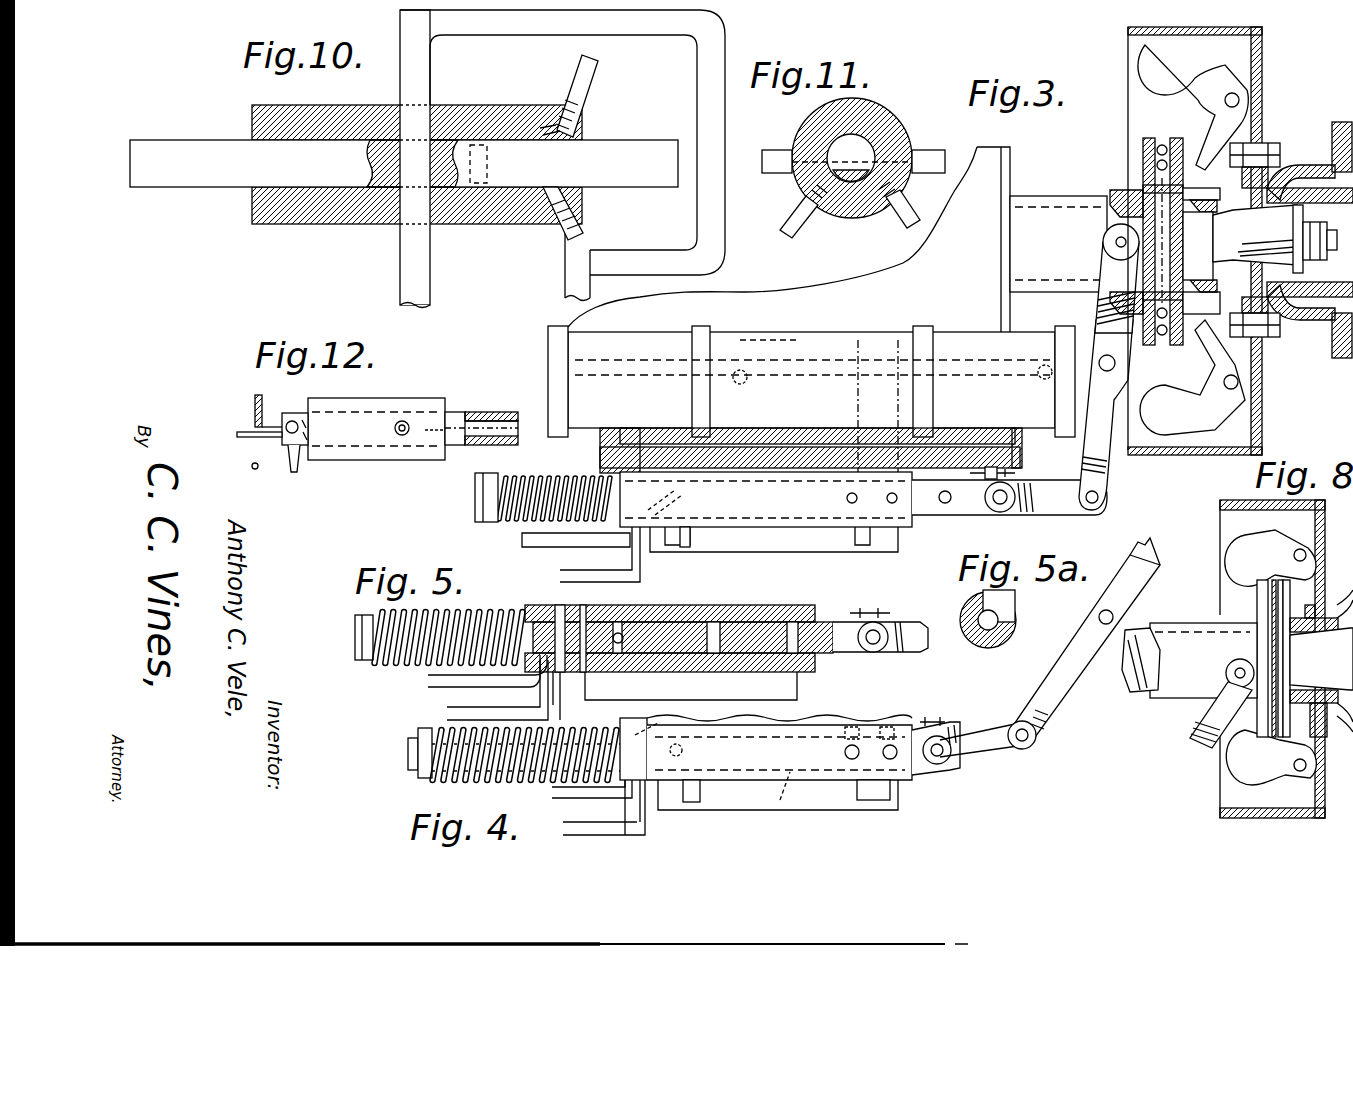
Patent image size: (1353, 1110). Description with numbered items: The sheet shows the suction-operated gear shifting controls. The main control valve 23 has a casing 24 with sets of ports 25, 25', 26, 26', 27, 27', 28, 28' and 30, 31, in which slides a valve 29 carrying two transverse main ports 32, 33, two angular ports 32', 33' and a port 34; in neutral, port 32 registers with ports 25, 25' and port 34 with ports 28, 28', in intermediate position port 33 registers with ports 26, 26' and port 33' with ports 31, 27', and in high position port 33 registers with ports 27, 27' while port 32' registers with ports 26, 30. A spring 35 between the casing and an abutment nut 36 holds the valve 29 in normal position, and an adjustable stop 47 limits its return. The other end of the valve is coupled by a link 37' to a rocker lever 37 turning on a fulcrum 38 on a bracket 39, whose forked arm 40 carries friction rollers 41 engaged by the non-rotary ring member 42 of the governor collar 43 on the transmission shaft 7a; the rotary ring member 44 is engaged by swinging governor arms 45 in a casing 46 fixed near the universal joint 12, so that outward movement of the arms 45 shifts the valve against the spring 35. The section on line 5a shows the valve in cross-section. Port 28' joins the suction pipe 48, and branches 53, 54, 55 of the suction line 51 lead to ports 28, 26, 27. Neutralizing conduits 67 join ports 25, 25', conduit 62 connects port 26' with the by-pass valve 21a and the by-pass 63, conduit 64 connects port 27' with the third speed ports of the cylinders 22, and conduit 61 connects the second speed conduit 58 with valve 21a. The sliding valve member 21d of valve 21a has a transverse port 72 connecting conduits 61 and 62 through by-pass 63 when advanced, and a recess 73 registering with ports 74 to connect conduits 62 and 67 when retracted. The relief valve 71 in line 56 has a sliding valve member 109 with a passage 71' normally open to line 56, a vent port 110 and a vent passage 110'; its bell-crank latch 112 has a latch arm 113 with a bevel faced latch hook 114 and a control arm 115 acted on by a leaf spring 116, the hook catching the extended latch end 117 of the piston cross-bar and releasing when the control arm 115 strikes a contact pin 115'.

In FIG. 3, the section line 5a is at (848, 425).
In FIG. 3, the transmission shaft 7a is at (1272, 232).
In FIG. 8, the transmission shaft 7a is at (1138, 690).
In FIG. 3, the universal joint 12 is at (1291, 240).
In FIG. 8, the universal joint 12 is at (1340, 730).
In FIG. 10, the by-pass valve 21a is at (372, 108).
In FIG. 11, the by-pass valve 21a is at (866, 112).
In FIG. 10, the sliding valve member 21d is at (220, 182).
In FIG. 11, the sliding valve member 21d is at (832, 150).
In FIG. 3, the cylinder 22 is at (650, 345).
In FIG. 3, the main control valve 23 is at (668, 445).
In FIG. 3, the casing 24 is at (778, 470).
In FIG. 5, the casing 24 is at (822, 622).
In FIG. 4, the casing 24 is at (778, 735).
In FIG. 5a, the casing 24 is at (1008, 598).
In FIG. 5, the port 25 is at (525, 696).
In FIG. 4, the port 25 is at (617, 807).
In FIG. 5, the port 25' is at (542, 624).
In FIG. 4, the port 25' is at (690, 710).
In FIG. 5, the port 26 is at (722, 683).
In FIG. 4, the port 26 is at (846, 813).
In FIG. 3, the port 26' is at (821, 532).
In FIG. 5, the port 26' is at (767, 589).
In FIG. 4, the port 26' is at (855, 715).
In FIG. 5a, the port 26' is at (1019, 615).
In FIG. 5, the port 27 is at (813, 683).
In FIG. 4, the port 27 is at (934, 781).
In FIG. 3, the port 27' is at (878, 496).
In FIG. 5, the port 27' is at (809, 599).
In FIG. 4, the port 27' is at (913, 710).
In FIG. 5, the port 28 is at (606, 683).
In FIG. 4, the port 28 is at (731, 814).
In FIG. 3, the port 28' is at (653, 498).
In FIG. 4, the port 28' is at (683, 781).
In FIG. 3, the sliding valve 29 is at (935, 512).
In FIG. 5, the sliding valve 29 is at (680, 622).
In FIG. 4, the sliding valve 29 is at (450, 757).
In FIG. 5a, the sliding valve 29 is at (993, 648).
In FIG. 5, the port 30 is at (738, 622).
In FIG. 4, the port 30 is at (848, 745).
In FIG. 4, the port 31 is at (930, 722).
In FIG. 5a, the port 31 is at (952, 709).
In FIG. 3, the main port 32 is at (764, 532).
In FIG. 5, the main port 32 is at (679, 624).
In FIG. 4, the main port 32 is at (753, 738).
In FIG. 5, the angular port 32' is at (730, 593).
In FIG. 4, the angular port 32' is at (780, 804).
In FIG. 5, the main port 33 is at (780, 599).
In FIG. 4, the main port 33 is at (825, 803).
In FIG. 3, the angular port 33' is at (955, 477).
In FIG. 5, the angular port 33' is at (835, 665).
In FIG. 4, the angular port 33' is at (899, 722).
In FIG. 3, the port 34 is at (710, 520).
In FIG. 5, the port 34 is at (638, 622).
In FIG. 3, the spring 35 is at (565, 478).
In FIG. 5, the spring 35 is at (462, 616).
In FIG. 4, the spring 35 is at (440, 732).
In FIG. 3, the abutment nut 36 is at (478, 485).
In FIG. 5, the abutment nut 36 is at (366, 662).
In FIG. 4, the abutment nut 36 is at (410, 750).
In FIG. 3, the rocker lever 37 is at (1132, 415).
In FIG. 5a, the rocker lever 37 is at (1085, 639).
In FIG. 3, the link 37' is at (1072, 468).
In FIG. 5, the link 37' is at (929, 652).
In FIG. 5a, the link 37' is at (988, 744).
In FIG. 3, the fulcrum 38 is at (1116, 362).
In FIG. 5a, the fulcrum 38 is at (1115, 617).
In FIG. 3, the bracket 39 is at (1083, 357).
In FIG. 3, the forked arm 40 is at (1103, 270).
In FIG. 8, the forked arm 40 is at (1195, 735).
In FIG. 3, the friction rollers 41 is at (1105, 240).
In FIG. 8, the friction rollers 41 is at (1225, 680).
In FIG. 3, the non-rotary ring member 42 is at (1143, 160).
In FIG. 8, the non-rotary ring member 42 is at (1255, 610).
In FIG. 3, the centrifugal governor collar 43 is at (1149, 140).
In FIG. 8, the centrifugal governor collar 43 is at (1255, 583).
In FIG. 3, the rotary ring member 44 is at (1178, 140).
In FIG. 8, the rotary ring member 44 is at (1290, 578).
In FIG. 3, the governor arms 45 is at (1225, 70).
In FIG. 8, the governor arms 45 is at (1285, 540).
In FIG. 3, the casing 46 is at (1188, 30).
In FIG. 8, the casing 46 is at (1225, 520).
In FIG. 3, the adjustable stop 47 is at (1015, 470).
In FIG. 5, the adjustable stop 47 is at (872, 612).
In FIG. 5a, the adjustable stop 47 is at (958, 728).
In FIG. 3, the suction pipe 48 is at (530, 545).
In FIG. 5, the suction pipe 48 is at (430, 683).
In FIG. 4, the suction pipe 48 is at (560, 800).
In FIG. 3, the suction line 51 is at (655, 550).
In FIG. 5, the suction line 51 is at (678, 700).
In FIG. 4, the suction line 51 is at (890, 805).
In FIG. 3, the branch 53 is at (688, 540).
In FIG. 3, the branch 54 is at (863, 545).
In FIG. 3, the branch 55 is at (900, 532).
In FIG. 12, the suction line 56 is at (406, 420).
In FIG. 3, the second speed conduit 58 is at (770, 360).
In FIG. 10, the conduit 61 is at (420, 286).
In FIG. 11, the conduit 61 is at (773, 150).
In FIG. 10, the conduit 62 is at (591, 292).
In FIG. 11, the conduit 62 is at (786, 216).
In FIG. 10, the by-pass 63 is at (618, 30).
In FIG. 11, the by-pass 63 is at (924, 150).
In FIG. 3, the suction conduit 64 is at (820, 375).
In FIG. 10, the neutralizing conduit 67 is at (586, 95).
In FIG. 11, the neutralizing conduit 67 is at (910, 210).
In FIG. 3, the neutralizing conduit 67 is at (810, 440).
In FIG. 5, the neutralizing conduit 67 is at (458, 715).
In FIG. 4, the neutralizing conduit 67 is at (563, 828).
In FIG. 12, the relief valve 71 is at (376, 417).
In FIG. 12, the passage 71' is at (380, 473).
In FIG. 10, the transverse port 72 is at (412, 185).
In FIG. 10, the transverse groove 73 is at (486, 142).
In FIG. 11, the transverse groove 73 is at (851, 185).
In FIG. 10, the ports 74 is at (578, 127).
In FIG. 11, the ports 74 is at (828, 215).
In FIG. 12, the sliding valve member 109 is at (466, 407).
In FIG. 12, the vent port 110 is at (422, 459).
In FIG. 12, the vent passage 110' is at (502, 416).
In FIG. 12, the bell-crank latch 112 is at (268, 425).
In FIG. 12, the latch arm 113 is at (250, 437).
In FIG. 12, the latch hook 114 is at (256, 418).
In FIG. 12, the control arm 115 is at (287, 471).
In FIG. 12, the contact pin 115' is at (254, 480).
In FIG. 12, the leaf spring 116 is at (300, 455).
In FIG. 12, the latch end 117 is at (258, 396).